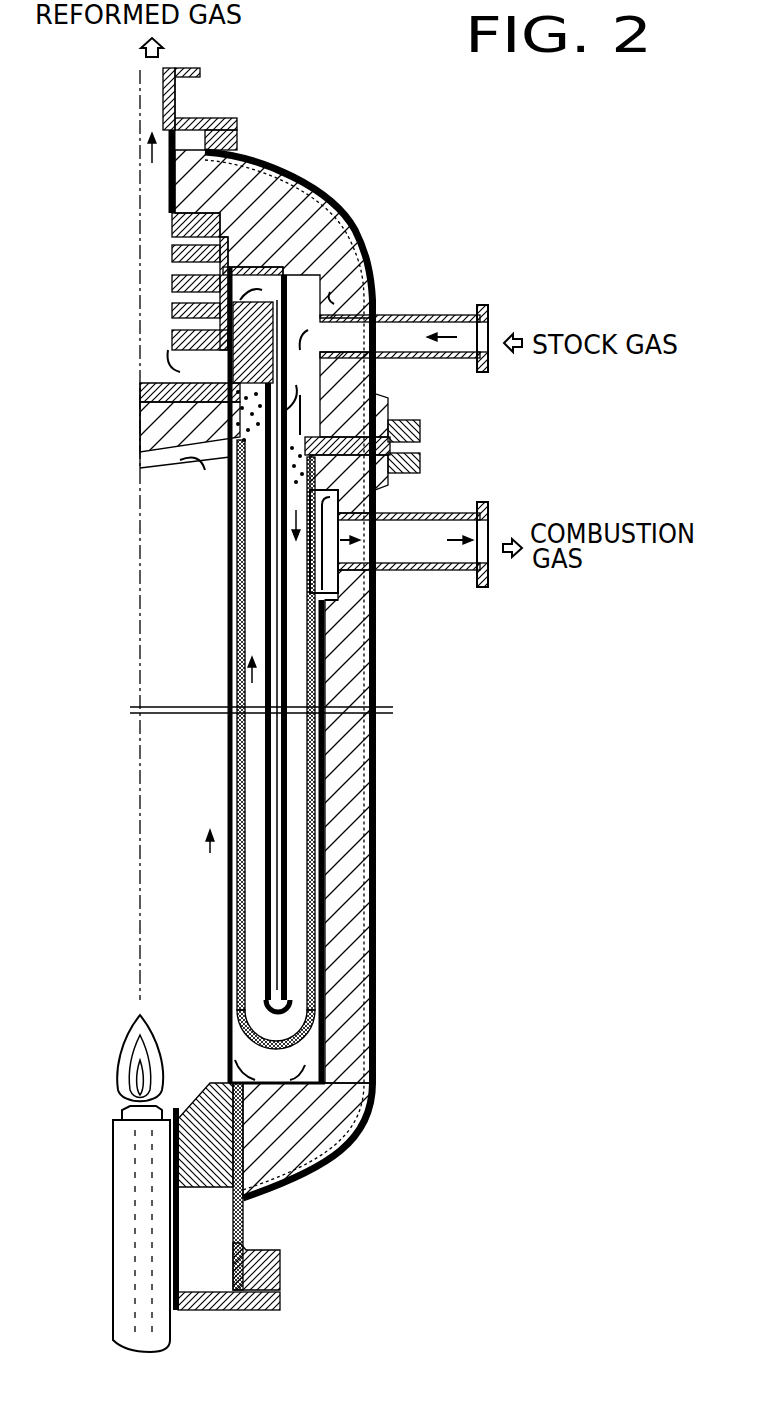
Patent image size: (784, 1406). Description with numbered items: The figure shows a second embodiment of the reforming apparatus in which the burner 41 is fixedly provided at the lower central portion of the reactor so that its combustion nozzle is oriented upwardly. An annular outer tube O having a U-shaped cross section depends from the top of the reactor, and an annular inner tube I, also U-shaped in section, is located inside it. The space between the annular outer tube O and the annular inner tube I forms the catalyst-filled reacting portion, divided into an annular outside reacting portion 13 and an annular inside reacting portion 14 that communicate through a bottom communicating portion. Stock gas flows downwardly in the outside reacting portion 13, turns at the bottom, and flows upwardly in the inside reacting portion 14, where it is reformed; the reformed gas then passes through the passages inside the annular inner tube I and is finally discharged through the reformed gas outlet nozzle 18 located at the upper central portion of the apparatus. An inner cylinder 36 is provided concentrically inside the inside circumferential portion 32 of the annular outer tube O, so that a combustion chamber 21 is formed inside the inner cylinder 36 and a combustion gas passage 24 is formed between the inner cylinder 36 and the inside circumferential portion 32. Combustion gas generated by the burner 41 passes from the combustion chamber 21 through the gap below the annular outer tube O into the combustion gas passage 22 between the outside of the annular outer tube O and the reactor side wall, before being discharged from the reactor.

The reformed gas outlet nozzle 18 is at (148, 90).
The combustion gas passage 24 is at (230, 658).
The outside reacting portion 13 is at (295, 663).
The combustion gas passage 22 is at (315, 755).
The combustion chamber 21 is at (170, 785).
The inside reacting portion 14 is at (253, 862).
The annular outer tube O is at (323, 900).
The annular inner tube I is at (290, 942).
The inside circumferential portion 32 is at (242, 935).
The inner cylinder 36 is at (233, 1003).
The burner 41 is at (120, 1165).